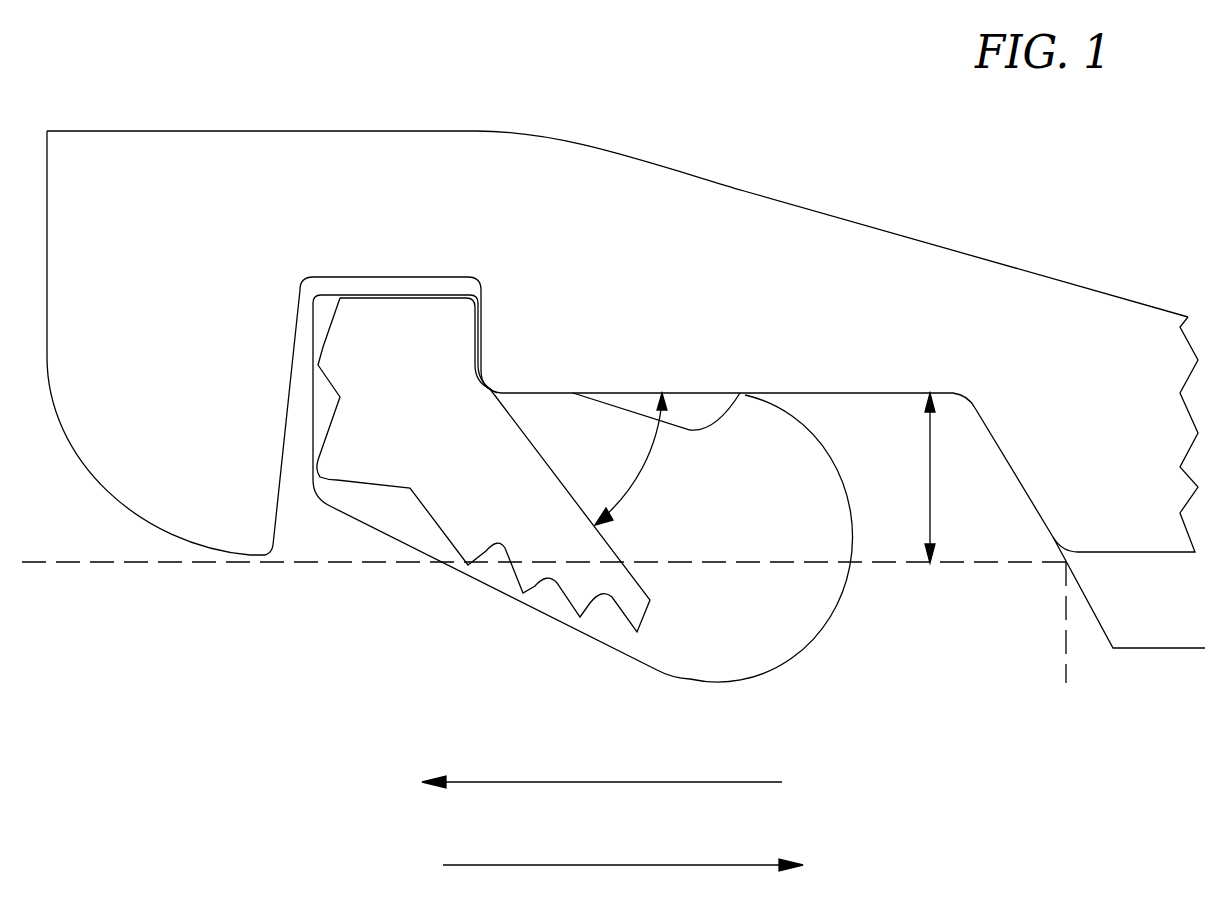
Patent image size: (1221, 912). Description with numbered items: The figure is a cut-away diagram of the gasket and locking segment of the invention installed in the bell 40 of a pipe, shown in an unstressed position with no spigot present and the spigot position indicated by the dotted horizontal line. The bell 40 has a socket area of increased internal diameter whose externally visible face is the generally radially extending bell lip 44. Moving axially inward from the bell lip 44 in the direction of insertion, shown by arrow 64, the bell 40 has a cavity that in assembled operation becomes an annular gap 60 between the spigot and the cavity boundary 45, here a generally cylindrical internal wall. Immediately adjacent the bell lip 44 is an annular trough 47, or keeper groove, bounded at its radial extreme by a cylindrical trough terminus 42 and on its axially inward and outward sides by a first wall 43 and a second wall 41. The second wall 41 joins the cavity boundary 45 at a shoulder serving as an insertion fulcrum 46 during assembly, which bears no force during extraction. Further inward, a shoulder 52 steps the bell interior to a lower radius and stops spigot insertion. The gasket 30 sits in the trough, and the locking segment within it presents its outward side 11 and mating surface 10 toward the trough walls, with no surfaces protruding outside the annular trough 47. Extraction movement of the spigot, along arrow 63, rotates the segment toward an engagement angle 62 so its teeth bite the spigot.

The mating surface 10 is at (435, 298).
The outward side 11 is at (333, 418).
The gasket 30 is at (833, 492).
The bell 40 is at (150, 146).
The second wall 41 is at (483, 302).
The trough terminus 42 is at (390, 275).
The first wall 43 is at (300, 330).
The bell lip 44 is at (130, 443).
The cavity boundary 45 is at (835, 393).
The insertion fulcrum 46 is at (487, 382).
The annular trough 47 is at (346, 287).
The shoulder 52 is at (1129, 482).
The annular gap 60 is at (933, 483).
The engagement angle 62 is at (656, 459).
The extraction direction arrow 63 is at (629, 771).
The insertion direction arrow 64 is at (602, 854).